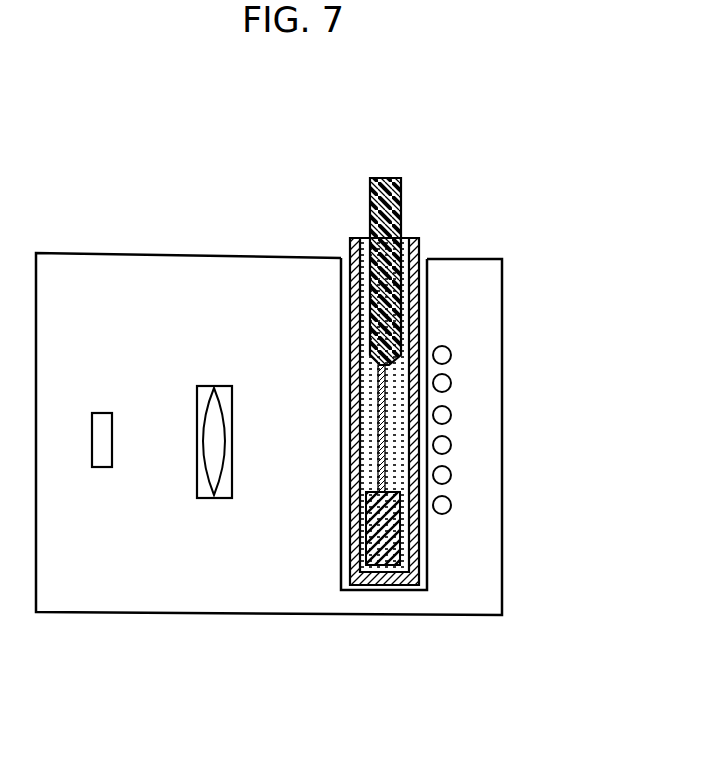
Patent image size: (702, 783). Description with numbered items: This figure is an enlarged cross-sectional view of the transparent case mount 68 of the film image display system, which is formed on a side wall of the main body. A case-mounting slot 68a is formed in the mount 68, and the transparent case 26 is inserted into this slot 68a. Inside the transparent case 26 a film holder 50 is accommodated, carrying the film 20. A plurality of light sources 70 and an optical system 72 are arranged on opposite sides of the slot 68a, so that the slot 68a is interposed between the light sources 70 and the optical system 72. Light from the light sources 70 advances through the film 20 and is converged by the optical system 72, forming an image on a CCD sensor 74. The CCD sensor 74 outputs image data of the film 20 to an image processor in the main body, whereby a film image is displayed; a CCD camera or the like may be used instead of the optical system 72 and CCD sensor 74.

The film 20 is at (376, 424).
The transparent case 26 is at (352, 238).
The film holder 50 is at (390, 178).
The transparent case mount 68 is at (336, 621).
The case-mounting slot 68a is at (424, 260).
The light sources 70 is at (451, 414).
The optical system 72 is at (215, 472).
The CCD sensor 74 is at (104, 462).